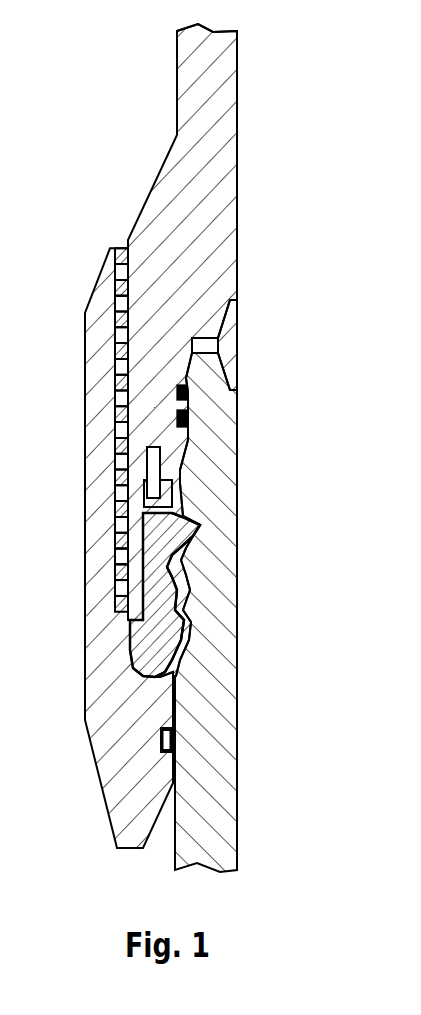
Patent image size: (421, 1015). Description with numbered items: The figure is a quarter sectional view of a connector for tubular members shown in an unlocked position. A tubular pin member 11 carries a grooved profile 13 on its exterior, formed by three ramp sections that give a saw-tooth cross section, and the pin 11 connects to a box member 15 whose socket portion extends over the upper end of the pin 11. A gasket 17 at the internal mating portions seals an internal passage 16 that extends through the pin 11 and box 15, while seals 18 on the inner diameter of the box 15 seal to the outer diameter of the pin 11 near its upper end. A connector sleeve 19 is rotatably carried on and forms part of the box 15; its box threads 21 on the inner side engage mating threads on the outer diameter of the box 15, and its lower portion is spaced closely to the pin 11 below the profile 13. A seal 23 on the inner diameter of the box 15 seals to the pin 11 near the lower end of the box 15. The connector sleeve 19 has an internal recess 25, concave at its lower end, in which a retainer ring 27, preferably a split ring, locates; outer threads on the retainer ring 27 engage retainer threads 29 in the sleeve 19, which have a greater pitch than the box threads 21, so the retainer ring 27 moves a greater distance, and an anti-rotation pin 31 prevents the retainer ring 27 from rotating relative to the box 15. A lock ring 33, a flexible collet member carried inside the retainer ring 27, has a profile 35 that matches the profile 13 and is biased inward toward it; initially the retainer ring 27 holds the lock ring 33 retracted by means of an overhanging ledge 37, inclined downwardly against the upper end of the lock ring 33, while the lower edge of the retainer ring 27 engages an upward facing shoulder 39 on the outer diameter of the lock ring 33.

The tubular pin member 11 is at (218, 477).
The grooved profile 13 is at (192, 548).
The box member 15 is at (225, 97).
The internal passage 16 is at (239, 201).
The gasket 17 is at (233, 341).
The seals 18 is at (187, 393).
The connector sleeve 19 is at (97, 387).
The box threads 21 is at (118, 285).
The seal 23 is at (177, 740).
The internal recess 25 is at (172, 660).
The retainer ring 27 is at (140, 508).
The retainer threads 29 is at (120, 560).
The anti-rotation pin 31 is at (154, 460).
The lock ring 33 is at (178, 642).
The profile 35 is at (188, 590).
The overhanging ledge 37 is at (195, 538).
The upward facing shoulder 39 is at (130, 608).